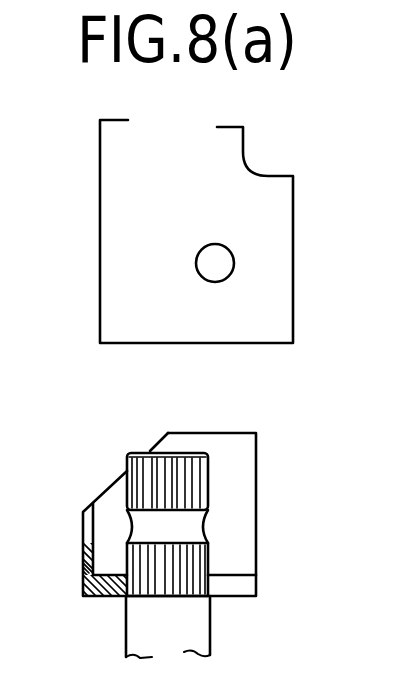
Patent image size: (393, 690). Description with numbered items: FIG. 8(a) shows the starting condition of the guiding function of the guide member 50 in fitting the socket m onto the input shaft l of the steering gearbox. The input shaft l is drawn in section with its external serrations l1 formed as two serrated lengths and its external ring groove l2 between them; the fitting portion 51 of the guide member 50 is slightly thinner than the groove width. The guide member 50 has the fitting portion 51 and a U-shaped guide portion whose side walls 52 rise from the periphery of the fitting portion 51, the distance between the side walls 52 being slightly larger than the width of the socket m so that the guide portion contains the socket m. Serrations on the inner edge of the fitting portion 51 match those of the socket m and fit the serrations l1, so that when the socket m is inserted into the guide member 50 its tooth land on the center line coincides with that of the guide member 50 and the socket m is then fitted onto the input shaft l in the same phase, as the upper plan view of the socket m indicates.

The socket m is at (277, 205).
The guide member 50 is at (233, 426).
The side wall 52 is at (243, 446).
The fitting portion 51 is at (212, 575).
The external serrations l1 is at (210, 488).
The external ring groove l2 is at (193, 532).
The input shaft l is at (145, 637).